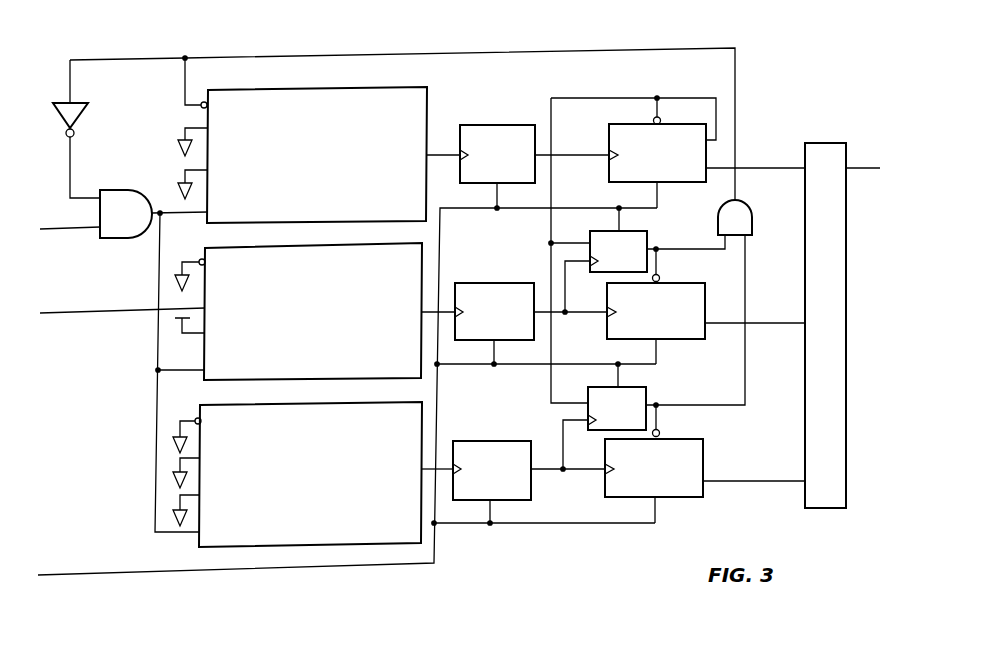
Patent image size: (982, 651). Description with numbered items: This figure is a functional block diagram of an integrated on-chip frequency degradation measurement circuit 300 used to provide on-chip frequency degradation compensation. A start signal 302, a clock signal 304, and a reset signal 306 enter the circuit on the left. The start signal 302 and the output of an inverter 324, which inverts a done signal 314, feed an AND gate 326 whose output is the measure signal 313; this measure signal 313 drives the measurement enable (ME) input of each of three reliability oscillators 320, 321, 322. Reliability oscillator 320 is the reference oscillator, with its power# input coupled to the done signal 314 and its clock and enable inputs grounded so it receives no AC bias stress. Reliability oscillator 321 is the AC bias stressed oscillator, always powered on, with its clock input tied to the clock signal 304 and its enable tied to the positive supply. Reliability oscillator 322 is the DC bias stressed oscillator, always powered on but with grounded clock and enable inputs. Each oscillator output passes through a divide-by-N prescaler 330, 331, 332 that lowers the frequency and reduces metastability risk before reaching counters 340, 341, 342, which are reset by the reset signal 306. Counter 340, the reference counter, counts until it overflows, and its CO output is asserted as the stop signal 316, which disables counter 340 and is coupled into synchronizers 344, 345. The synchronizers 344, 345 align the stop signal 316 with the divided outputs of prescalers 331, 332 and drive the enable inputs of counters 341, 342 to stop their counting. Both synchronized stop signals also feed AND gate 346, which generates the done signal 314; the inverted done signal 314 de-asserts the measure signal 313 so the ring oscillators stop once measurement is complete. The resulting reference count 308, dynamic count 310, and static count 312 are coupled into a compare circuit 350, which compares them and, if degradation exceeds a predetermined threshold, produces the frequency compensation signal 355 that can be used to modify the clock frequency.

The frequency degradation measurement circuit 300 is at (116, 31).
The start signal 302 is at (67, 232).
The clock signal 304 is at (74, 314).
The reset signal 306 is at (73, 578).
The reference count signal 308 is at (745, 170).
The dynamic count signal 310 is at (753, 325).
The static count signal 312 is at (750, 483).
The measure signal 313 is at (158, 348).
The done signal 314 is at (371, 52).
The stop signal 316 is at (638, 98).
The reliability oscillator 320 is at (319, 141).
The reliability oscillator 321 is at (315, 311).
The reliability oscillator 322 is at (313, 474).
The inverter 324 is at (86, 112).
The AND gate 326 is at (113, 238).
The prescaler 330 is at (492, 125).
The prescaler 331 is at (489, 283).
The prescaler 332 is at (490, 441).
The counter 340 is at (609, 170).
The counter 341 is at (607, 330).
The counter 342 is at (605, 490).
The synchronizer 344 is at (648, 240).
The synchronizer 345 is at (646, 396).
The AND gate 346 is at (752, 232).
The compare circuit 350 is at (826, 143).
The frequency compensation signal 355 is at (865, 170).